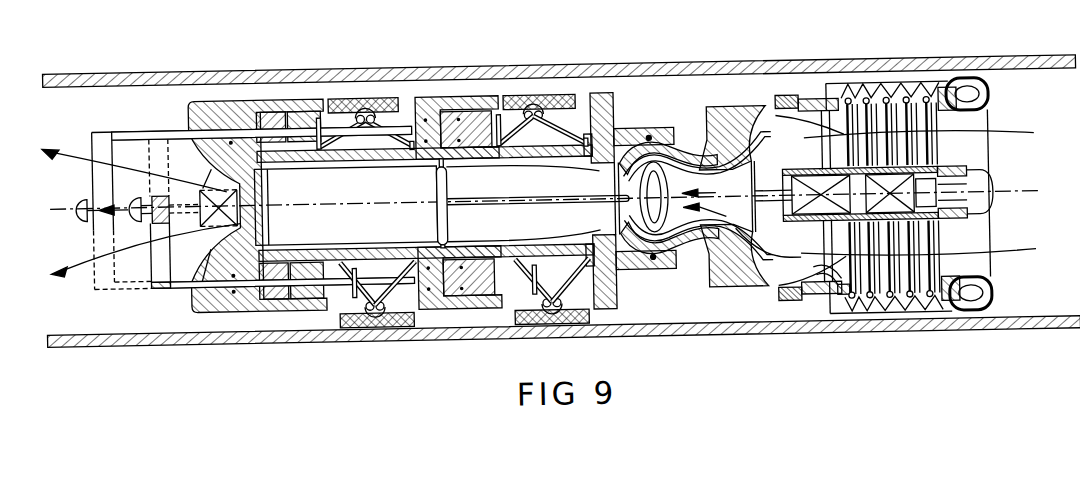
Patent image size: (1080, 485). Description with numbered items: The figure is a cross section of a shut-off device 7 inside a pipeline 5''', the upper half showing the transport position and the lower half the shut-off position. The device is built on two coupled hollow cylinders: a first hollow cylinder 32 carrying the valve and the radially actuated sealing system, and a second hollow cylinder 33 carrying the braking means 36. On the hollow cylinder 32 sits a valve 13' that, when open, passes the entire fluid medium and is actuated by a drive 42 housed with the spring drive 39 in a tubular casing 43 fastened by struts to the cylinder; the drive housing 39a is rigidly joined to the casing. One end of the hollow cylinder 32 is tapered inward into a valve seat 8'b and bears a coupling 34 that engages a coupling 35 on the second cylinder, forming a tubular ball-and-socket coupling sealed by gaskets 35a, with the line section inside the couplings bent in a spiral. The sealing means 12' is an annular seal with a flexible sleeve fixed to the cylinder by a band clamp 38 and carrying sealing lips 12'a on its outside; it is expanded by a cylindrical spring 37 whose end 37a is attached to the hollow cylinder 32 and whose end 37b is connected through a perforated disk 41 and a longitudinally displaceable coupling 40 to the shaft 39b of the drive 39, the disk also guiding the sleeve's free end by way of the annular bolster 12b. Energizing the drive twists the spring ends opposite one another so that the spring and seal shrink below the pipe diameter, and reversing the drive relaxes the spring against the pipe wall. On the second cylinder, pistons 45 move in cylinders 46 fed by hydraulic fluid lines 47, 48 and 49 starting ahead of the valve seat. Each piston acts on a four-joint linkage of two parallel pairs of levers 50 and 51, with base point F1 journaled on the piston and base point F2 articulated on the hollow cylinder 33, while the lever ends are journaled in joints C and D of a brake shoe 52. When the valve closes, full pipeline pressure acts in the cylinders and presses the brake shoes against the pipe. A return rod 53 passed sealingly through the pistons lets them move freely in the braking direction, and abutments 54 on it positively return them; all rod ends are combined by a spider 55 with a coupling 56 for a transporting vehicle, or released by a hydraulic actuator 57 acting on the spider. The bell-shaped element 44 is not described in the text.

The pipeline 5''' is at (561, 186).
The shut-off device 7 is at (894, 15).
The valve seat 8'b is at (722, 270).
The sealing means 12' is at (893, 159).
The sealing lips 12'a is at (889, 61).
The annular bolster 12b is at (990, 104).
The valve 13' is at (732, 139).
The hollow cylinder 32 is at (762, 114).
The second hollow cylinder 33 is at (538, 154).
The coupling 34 is at (682, 147).
The coupling 35 is at (649, 137).
The gaskets 35a is at (652, 264).
The braking means 36 is at (382, 325).
The cylindrical spring 37 is at (933, 89).
The spring end 37a is at (830, 290).
The spring end 37b is at (928, 318).
The band clamp 38 is at (782, 306).
The drive 39 is at (887, 329).
The housing 39a is at (867, 318).
The shaft 39b is at (968, 220).
The longitudinally displaceable coupling 40 is at (912, 204).
The perforated disk 41 is at (950, 160).
The drive 42 is at (820, 175).
The tubular casing 43 is at (793, 99).
The bell connection 44 is at (752, 292).
The pistons 45 is at (296, 118).
The cylinders 46 is at (266, 118).
The hydraulic fluid line 47 is at (236, 222).
The hydraulic fluid line 48 is at (393, 246).
The hydraulic fluid line 49 is at (513, 206).
The levers 50 is at (356, 136).
The levers 51 is at (397, 139).
The brake shoe 52 is at (390, 96).
The return rod 53 is at (218, 124).
The abutments 54 is at (372, 298).
The spider 55 is at (152, 252).
The coupling 56 is at (138, 216).
The hydraulic actuator 57 is at (198, 178).
The joint C is at (363, 110).
The joint D is at (373, 110).
The base point F1 is at (321, 113).
The base point F2 is at (408, 137).